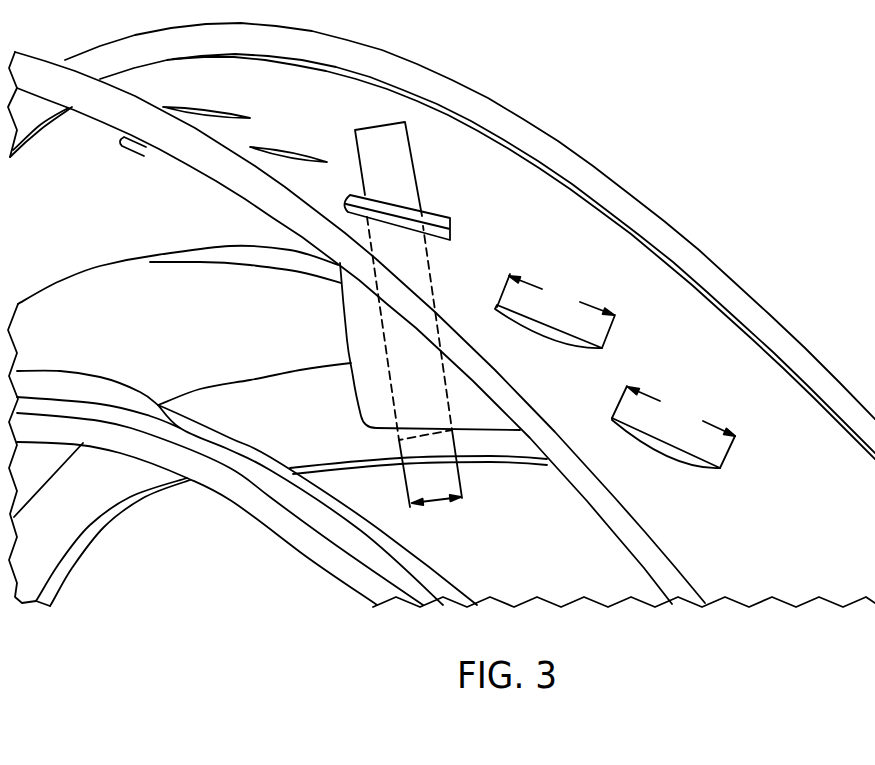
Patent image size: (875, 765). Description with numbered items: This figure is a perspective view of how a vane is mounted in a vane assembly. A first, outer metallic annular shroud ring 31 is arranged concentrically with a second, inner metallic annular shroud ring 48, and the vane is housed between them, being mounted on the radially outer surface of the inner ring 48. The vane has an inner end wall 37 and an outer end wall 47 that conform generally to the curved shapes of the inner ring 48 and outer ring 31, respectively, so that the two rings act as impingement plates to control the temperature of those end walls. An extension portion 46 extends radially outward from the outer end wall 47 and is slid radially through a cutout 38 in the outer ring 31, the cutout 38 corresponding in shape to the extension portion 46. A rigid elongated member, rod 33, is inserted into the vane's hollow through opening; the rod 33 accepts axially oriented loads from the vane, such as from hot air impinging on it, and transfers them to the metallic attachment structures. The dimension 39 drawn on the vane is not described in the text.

The outer shroud ring 31 is at (465, 145).
The rod 33 is at (402, 182).
The inner end wall 37 is at (231, 397).
The cutout 38 is at (302, 153).
The vane width dimension 39 is at (437, 503).
The extension portion 46 is at (442, 213).
The outer end wall 47 is at (149, 150).
The inner shroud ring 48 is at (56, 307).